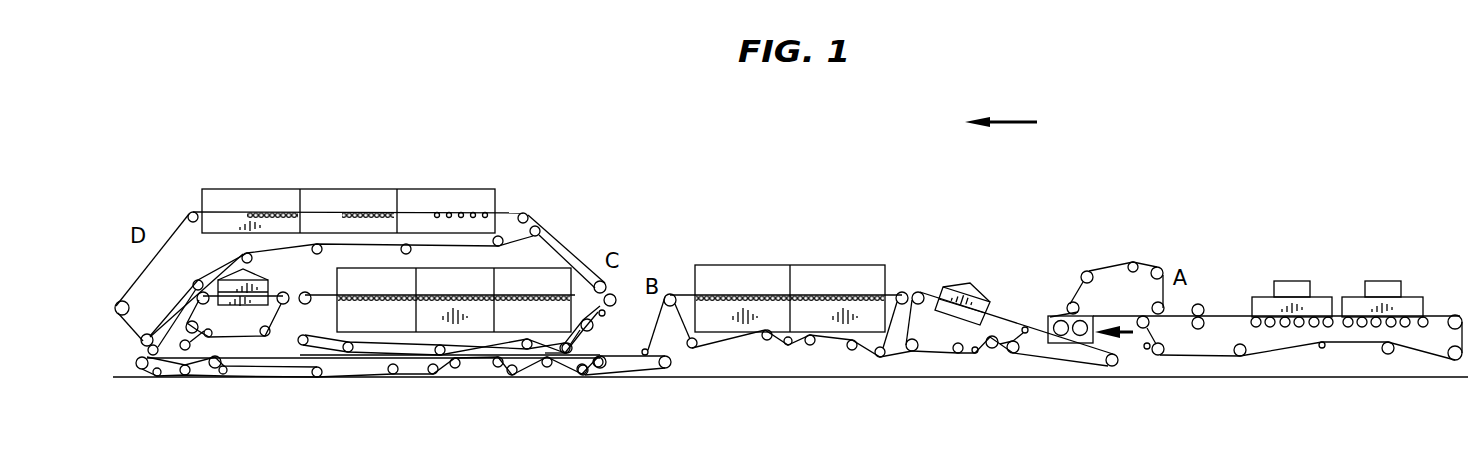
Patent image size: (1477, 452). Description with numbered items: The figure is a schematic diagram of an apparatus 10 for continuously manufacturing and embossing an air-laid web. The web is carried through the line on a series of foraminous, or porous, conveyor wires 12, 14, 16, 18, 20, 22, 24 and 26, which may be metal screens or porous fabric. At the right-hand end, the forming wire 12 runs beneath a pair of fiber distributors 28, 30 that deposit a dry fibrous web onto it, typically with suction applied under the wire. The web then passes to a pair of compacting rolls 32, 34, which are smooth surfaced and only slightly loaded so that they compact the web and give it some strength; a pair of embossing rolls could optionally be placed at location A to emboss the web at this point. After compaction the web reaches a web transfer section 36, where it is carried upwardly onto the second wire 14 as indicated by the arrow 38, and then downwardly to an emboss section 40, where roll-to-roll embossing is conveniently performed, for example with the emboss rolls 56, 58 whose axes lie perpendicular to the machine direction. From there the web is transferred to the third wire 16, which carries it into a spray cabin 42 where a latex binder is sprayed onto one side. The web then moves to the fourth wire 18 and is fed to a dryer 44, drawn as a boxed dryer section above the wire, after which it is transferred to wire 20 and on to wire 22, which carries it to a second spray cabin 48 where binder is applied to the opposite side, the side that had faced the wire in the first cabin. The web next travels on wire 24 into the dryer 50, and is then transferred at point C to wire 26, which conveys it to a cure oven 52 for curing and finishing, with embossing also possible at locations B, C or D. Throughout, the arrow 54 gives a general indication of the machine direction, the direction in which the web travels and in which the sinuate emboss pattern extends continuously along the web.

The apparatus 10 is at (780, 186).
The forming wire 12 is at (1435, 315).
The second conveyor wire 14 is at (1163, 284).
The third conveyor wire 16 is at (1000, 315).
The fourth conveyor wire 18 is at (687, 292).
The conveyor wire 20 is at (623, 378).
The conveyor wire 22 is at (277, 292).
The conveyor wire 24 is at (297, 320).
The conveyor wire 26 is at (563, 246).
The fiber distributor 28 is at (1273, 288).
The fiber distributor 30 is at (1378, 280).
The compacting roll 32 is at (1200, 303).
The compacting roll 34 is at (1200, 330).
The web transfer section 36 is at (1103, 264).
The arrow 38 is at (1126, 337).
The emboss section 40 is at (1058, 316).
The spray cabin 42 is at (957, 285).
The dryer section 44 is at (830, 267).
The spray cabin 48 is at (228, 287).
The dryer 50 is at (365, 320).
The cure oven 52 is at (381, 189).
The arrow 54 is at (1005, 120).
The emboss roll 56 is at (1060, 336).
The emboss roll 58 is at (1080, 336).